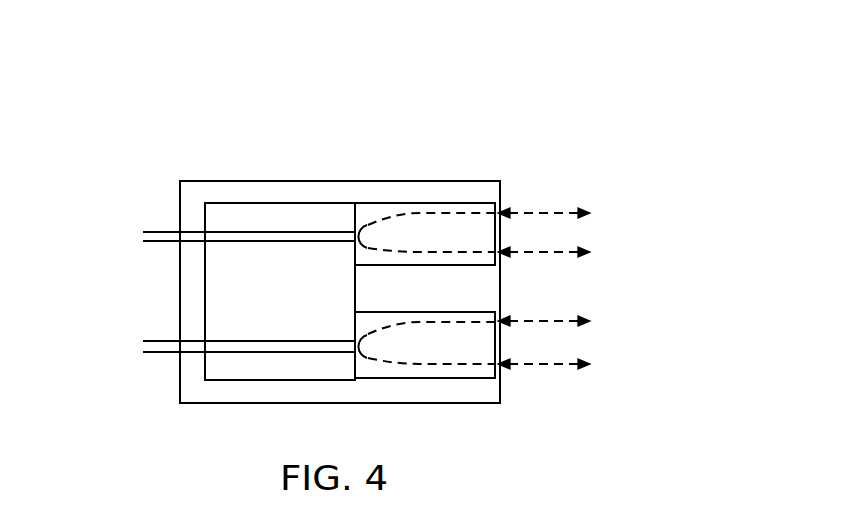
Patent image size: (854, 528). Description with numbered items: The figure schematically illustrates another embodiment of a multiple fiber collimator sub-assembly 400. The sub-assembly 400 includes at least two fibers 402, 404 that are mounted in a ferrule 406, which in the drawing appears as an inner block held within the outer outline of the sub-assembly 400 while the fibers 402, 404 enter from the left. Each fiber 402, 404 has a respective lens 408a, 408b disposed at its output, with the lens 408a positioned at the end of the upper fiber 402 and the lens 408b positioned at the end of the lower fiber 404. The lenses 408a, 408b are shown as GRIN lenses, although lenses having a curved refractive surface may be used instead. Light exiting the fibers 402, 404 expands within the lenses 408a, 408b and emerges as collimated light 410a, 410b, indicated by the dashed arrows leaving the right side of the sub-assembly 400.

The collimator sub-assembly 400 is at (317, 181).
The fiber 402 is at (167, 232).
The fiber 404 is at (163, 355).
The ferrule 406 is at (207, 288).
The lens 408a is at (445, 203).
The lens 408b is at (440, 380).
The collimated light 410a is at (563, 213).
The collimated light 410b is at (563, 364).